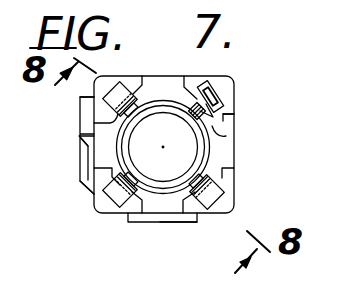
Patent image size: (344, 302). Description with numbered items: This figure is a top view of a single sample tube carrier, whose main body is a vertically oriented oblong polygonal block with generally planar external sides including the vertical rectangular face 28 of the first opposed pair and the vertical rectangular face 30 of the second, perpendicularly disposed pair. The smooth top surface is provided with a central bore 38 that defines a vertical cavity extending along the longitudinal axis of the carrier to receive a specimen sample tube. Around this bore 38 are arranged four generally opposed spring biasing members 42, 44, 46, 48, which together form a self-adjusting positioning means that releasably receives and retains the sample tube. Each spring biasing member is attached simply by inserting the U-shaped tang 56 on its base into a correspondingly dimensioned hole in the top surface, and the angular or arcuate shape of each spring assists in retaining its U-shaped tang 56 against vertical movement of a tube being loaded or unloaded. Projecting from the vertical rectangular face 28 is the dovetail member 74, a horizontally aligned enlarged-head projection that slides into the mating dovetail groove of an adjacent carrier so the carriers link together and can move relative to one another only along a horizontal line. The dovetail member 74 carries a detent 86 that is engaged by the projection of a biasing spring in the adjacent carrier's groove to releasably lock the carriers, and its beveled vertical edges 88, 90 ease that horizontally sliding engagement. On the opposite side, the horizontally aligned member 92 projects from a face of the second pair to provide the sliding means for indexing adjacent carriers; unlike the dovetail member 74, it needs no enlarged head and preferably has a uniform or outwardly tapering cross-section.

The vertical rectangular face 28 is at (91, 204).
The vertical rectangular face 30 is at (198, 75).
The central bore 38 is at (226, 136).
The spring biasing member 42 is at (208, 189).
The spring biasing member 44 is at (131, 221).
The spring biasing member 46 is at (140, 93).
The spring biasing member 48 is at (232, 109).
The U-shaped tang 56 is at (222, 100).
The dovetail member 74 is at (78, 115).
The detent 86 is at (77, 148).
The beveled vertical edge 88 is at (83, 97).
The beveled vertical edge 90 is at (80, 186).
The horizontally aligned member 92 is at (166, 224).